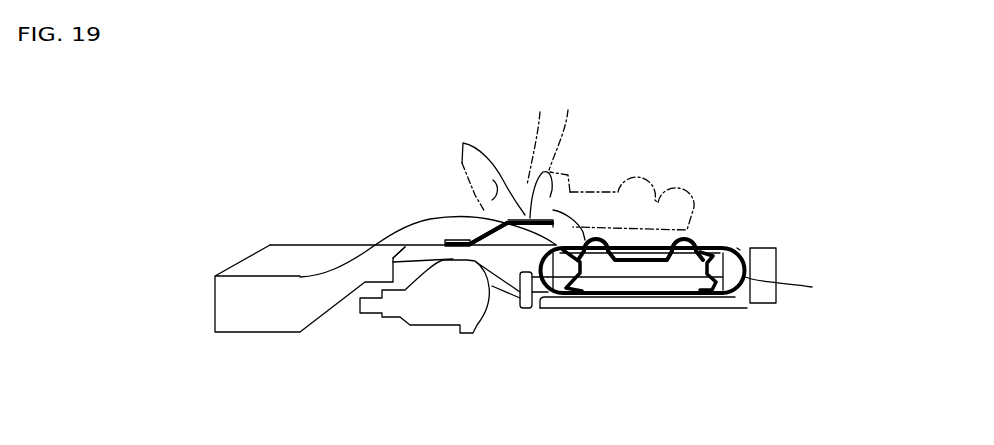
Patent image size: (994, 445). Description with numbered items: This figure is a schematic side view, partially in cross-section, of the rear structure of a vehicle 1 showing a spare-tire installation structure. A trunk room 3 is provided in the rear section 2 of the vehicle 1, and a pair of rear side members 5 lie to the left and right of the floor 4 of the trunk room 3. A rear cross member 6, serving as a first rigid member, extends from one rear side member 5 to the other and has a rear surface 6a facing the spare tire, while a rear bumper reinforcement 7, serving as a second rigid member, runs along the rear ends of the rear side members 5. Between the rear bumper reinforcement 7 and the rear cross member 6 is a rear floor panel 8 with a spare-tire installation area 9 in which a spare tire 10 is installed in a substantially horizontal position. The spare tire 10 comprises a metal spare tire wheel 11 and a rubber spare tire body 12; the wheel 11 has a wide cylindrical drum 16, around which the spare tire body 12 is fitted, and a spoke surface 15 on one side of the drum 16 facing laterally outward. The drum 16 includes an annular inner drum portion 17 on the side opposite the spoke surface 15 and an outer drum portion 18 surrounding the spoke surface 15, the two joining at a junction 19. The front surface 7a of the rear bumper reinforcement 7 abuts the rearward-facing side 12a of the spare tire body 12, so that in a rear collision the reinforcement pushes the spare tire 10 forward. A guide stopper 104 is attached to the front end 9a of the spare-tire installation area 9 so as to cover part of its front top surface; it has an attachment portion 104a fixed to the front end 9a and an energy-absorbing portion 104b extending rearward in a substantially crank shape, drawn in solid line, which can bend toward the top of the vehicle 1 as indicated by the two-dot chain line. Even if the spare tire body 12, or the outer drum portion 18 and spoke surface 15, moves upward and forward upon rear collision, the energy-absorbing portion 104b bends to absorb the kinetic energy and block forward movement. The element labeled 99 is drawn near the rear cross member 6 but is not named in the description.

The vehicle 1 is at (215, 247).
The rear section 2 is at (772, 313).
The trunk room 3 is at (657, 181).
The floor 4 is at (406, 247).
The rear side member 5 is at (285, 302).
The rear cross member 6 is at (515, 313).
The rear surface 6a is at (543, 295).
The rear bumper reinforcement 7 is at (778, 248).
The front surface 7a is at (737, 248).
The rear floor panel 8 is at (578, 308).
The spare-tire installation area 9 is at (630, 297).
The front end 9a is at (398, 240).
The spare tire 10 is at (617, 178).
The spare tire wheel 11 is at (670, 300).
The spare tire body 12 is at (722, 348).
The side facing the rear of the vehicle 12a is at (796, 288).
The spoke surface 15 is at (688, 238).
The drum 16 is at (528, 136).
The inner drum portion 17 is at (587, 290).
The outer drum portion 18 is at (592, 246).
The junction 19 is at (570, 266).
The motor 99 is at (438, 340).
The guide stopper 104 is at (390, 122).
The attachment portion 104a is at (448, 240).
The energy-absorbing portion 104b is at (487, 240).